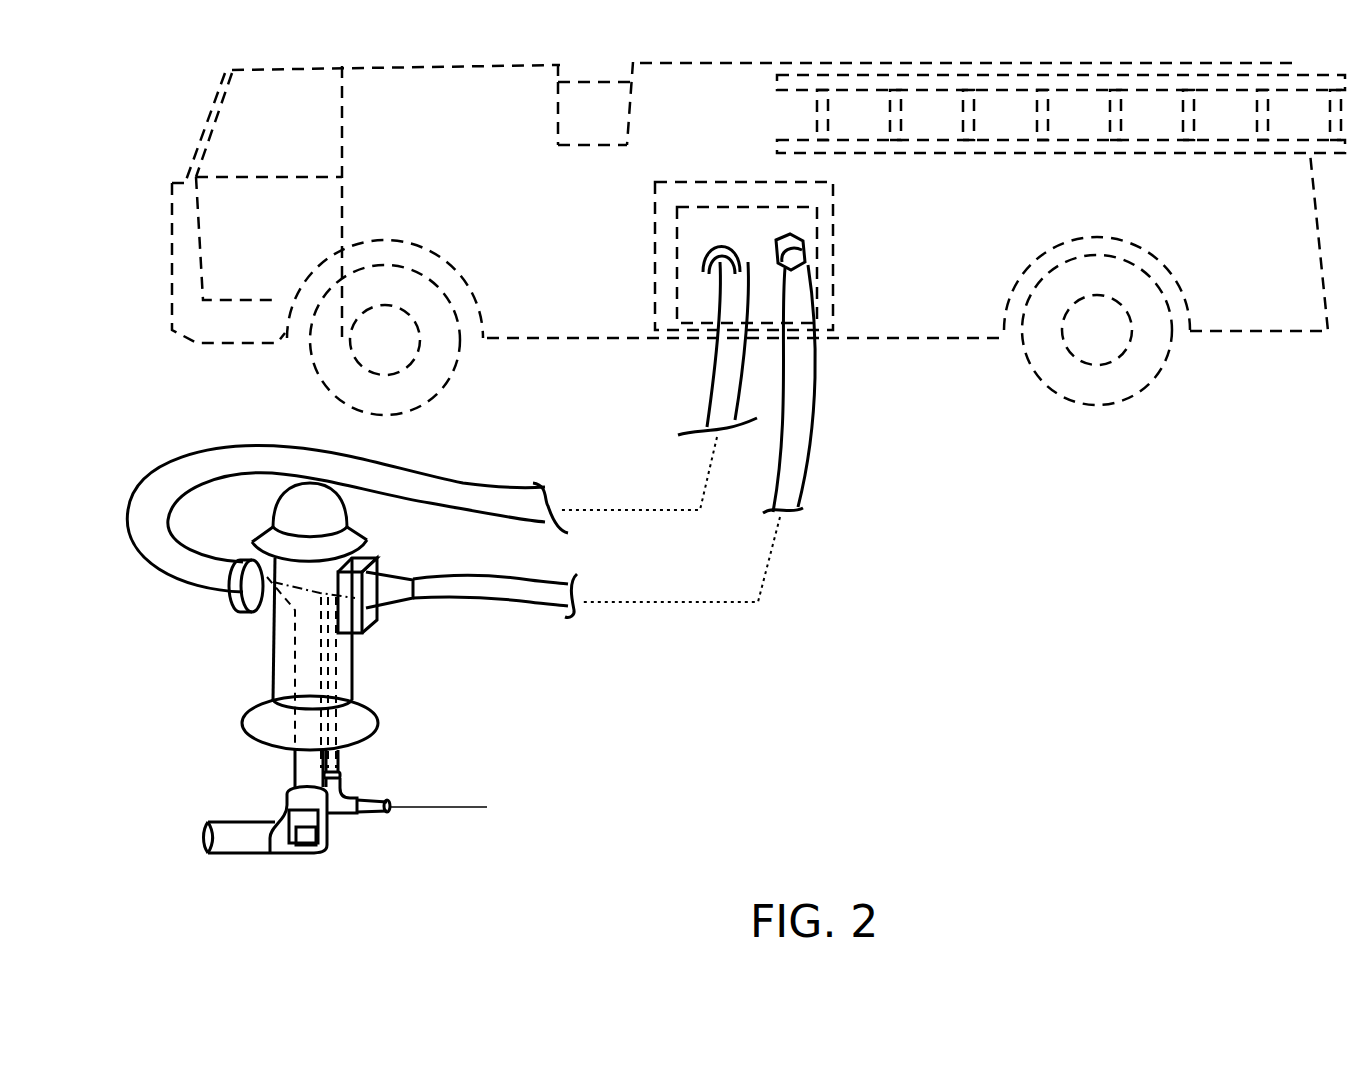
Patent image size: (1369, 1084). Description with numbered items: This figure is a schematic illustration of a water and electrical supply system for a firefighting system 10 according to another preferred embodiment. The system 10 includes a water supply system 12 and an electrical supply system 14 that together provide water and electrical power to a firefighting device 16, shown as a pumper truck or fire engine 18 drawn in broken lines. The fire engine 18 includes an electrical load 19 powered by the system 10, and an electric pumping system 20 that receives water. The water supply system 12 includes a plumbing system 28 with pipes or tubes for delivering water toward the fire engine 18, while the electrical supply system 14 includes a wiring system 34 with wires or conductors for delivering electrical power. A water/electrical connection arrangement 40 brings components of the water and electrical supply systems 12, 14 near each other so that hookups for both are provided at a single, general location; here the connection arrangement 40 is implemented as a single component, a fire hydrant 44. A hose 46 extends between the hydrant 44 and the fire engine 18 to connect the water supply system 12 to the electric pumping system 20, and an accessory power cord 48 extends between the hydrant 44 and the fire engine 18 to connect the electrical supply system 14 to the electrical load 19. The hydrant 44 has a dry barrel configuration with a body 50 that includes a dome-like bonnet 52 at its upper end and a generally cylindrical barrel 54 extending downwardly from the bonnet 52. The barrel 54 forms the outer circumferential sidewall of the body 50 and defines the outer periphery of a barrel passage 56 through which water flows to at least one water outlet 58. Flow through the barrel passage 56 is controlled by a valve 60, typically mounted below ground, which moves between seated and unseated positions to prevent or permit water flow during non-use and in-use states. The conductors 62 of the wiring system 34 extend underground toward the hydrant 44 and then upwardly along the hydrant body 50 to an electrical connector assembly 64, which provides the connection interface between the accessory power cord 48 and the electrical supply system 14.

The firefighting system 10 is at (1070, 642).
The water supply system 12 is at (145, 830).
The electrical supply system 14 is at (462, 765).
The firefighting device 16 is at (758, 278).
The fire engine 18 is at (965, 318).
The electrical load 19 is at (679, 210).
The electric pumping system 20 is at (668, 226).
The plumbing system 28 is at (203, 857).
The wiring system 34 is at (397, 820).
The water/electrical connection arrangement 40 is at (264, 703).
The hydrant 44 is at (284, 703).
The hose 46 is at (477, 492).
The accessory power cord 48 is at (517, 587).
The body 50 is at (252, 743).
The bonnet 52 is at (285, 510).
The barrel 54 is at (277, 628).
The barrel passage 56 is at (300, 672).
The water outlet 58 is at (262, 598).
The valve 60 is at (302, 833).
The conductors 62 is at (433, 805).
The connector assembly 64 is at (375, 622).